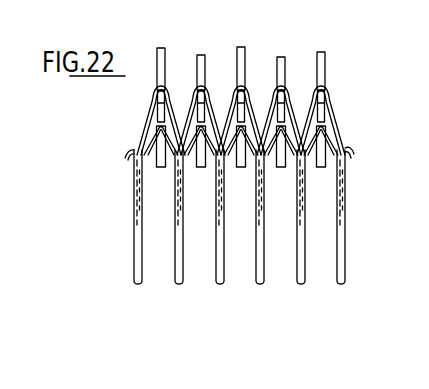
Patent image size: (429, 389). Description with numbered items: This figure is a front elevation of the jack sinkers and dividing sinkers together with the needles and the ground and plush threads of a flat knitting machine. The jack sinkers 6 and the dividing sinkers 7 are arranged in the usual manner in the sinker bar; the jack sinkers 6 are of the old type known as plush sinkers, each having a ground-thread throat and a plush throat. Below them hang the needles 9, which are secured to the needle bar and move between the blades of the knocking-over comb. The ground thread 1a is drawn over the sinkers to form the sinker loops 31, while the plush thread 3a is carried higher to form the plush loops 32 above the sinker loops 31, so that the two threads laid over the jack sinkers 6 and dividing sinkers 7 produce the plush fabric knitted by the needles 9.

The jack sinker 6 is at (325, 63).
The dividing sinker 7 is at (281, 58).
The plush loop 32 is at (290, 108).
The sinker loop 31 is at (335, 137).
The plush thread 3a is at (351, 148).
The ground thread 1a is at (348, 158).
The needle 9 is at (344, 266).